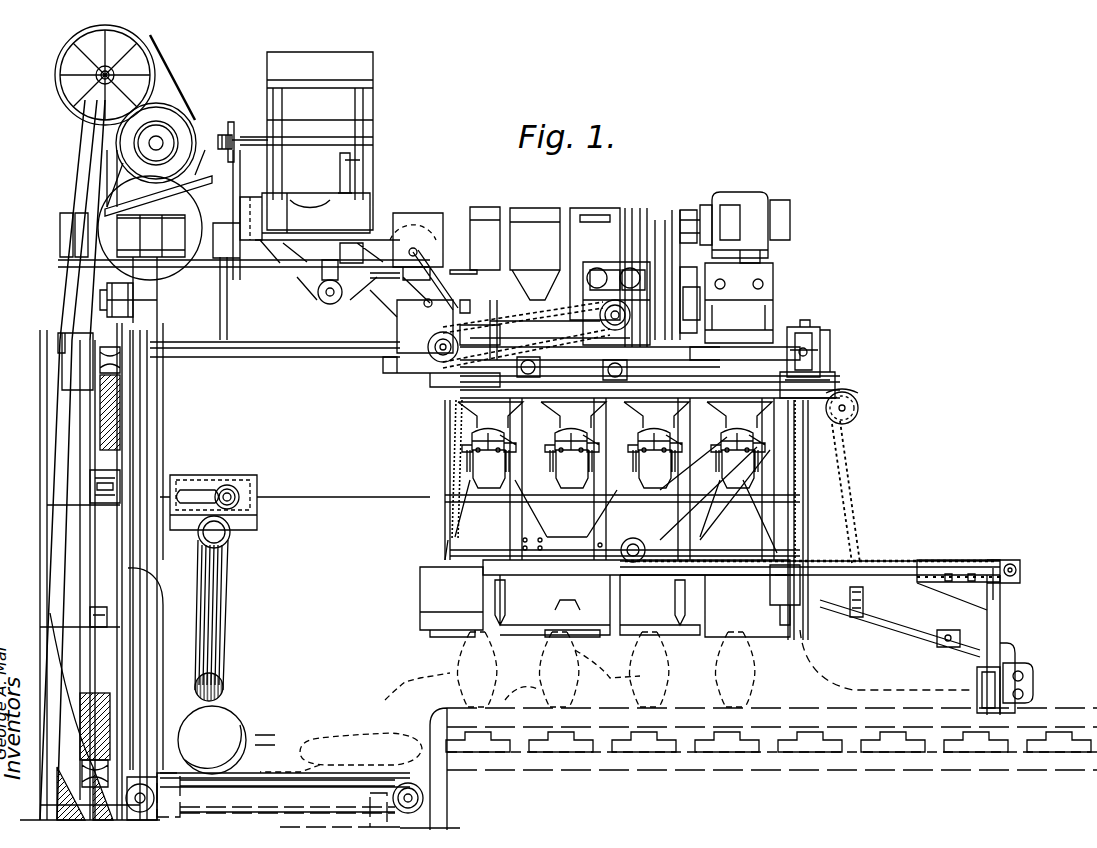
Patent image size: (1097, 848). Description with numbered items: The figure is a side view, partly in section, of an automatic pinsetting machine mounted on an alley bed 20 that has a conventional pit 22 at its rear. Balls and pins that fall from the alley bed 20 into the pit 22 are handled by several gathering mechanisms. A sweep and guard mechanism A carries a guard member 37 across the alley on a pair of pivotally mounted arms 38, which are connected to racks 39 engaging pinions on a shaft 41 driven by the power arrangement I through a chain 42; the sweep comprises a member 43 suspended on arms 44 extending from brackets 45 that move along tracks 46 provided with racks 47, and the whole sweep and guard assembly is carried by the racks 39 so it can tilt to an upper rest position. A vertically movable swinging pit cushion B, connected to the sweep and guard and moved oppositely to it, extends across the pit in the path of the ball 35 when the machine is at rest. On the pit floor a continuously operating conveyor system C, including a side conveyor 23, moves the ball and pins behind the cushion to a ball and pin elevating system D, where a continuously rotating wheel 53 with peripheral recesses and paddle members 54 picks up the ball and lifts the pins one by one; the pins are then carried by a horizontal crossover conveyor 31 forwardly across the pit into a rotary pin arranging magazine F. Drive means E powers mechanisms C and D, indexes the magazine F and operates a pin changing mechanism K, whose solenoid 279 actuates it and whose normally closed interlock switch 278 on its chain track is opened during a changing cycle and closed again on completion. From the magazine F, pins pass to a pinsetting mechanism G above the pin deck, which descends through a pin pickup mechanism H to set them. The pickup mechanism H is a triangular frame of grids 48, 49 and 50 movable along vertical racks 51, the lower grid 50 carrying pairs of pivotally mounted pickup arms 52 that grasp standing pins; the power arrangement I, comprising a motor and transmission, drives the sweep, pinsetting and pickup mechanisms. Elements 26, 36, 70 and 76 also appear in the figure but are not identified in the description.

The alley bed 20 is at (1043, 713).
The pit 22 is at (417, 813).
The side conveyor 23 is at (277, 777).
The frame column 26 is at (90, 537).
The crossover conveyor 31 is at (307, 243).
The ball 35 is at (223, 713).
The container 36 is at (423, 680).
The guard member 37 is at (1020, 670).
The arms 38 is at (903, 623).
The racks 39 is at (843, 495).
The shaft 41 is at (863, 405).
The chain 42 is at (785, 333).
The sweep member 43 is at (977, 680).
The arms 44 is at (987, 620).
The brackets 45 is at (947, 590).
The tracks 46 is at (900, 570).
The racks 47 is at (870, 560).
The grid 48 is at (820, 377).
The grid 49 is at (787, 567).
The lower grid 50 is at (805, 640).
The racks 51 is at (447, 523).
The pickup arms 52 is at (530, 617).
The wheel 53 is at (100, 412).
The paddle members 54 is at (100, 357).
The motor 70 is at (747, 197).
The adjusting screw 76 is at (185, 137).
The interlock switch 278 is at (367, 178).
The solenoid 279 is at (203, 277).
The sweep and guard mechanism A is at (998, 624).
The swinging pit cushion B is at (228, 601).
The conveyor system C is at (271, 729).
The ball and pin elevating system D is at (154, 443).
The drive means E is at (189, 111).
The rotary pin arranging magazine F is at (534, 196).
The pinsetting mechanism G is at (437, 451).
The pin pickup mechanism H is at (414, 601).
The power arrangement I is at (780, 187).
The pin changing mechanism K is at (379, 124).